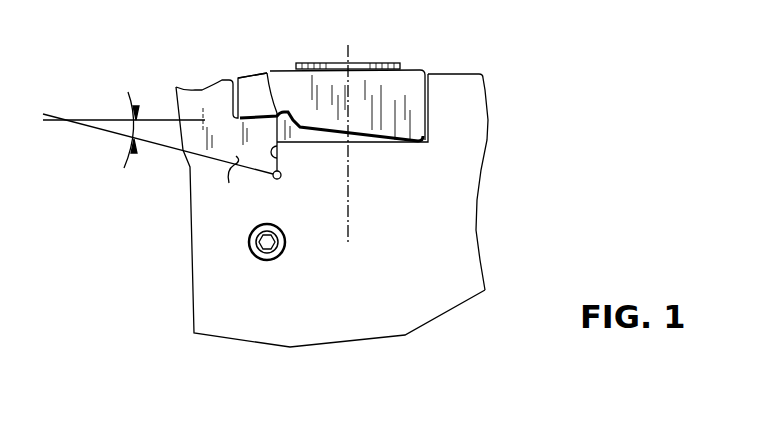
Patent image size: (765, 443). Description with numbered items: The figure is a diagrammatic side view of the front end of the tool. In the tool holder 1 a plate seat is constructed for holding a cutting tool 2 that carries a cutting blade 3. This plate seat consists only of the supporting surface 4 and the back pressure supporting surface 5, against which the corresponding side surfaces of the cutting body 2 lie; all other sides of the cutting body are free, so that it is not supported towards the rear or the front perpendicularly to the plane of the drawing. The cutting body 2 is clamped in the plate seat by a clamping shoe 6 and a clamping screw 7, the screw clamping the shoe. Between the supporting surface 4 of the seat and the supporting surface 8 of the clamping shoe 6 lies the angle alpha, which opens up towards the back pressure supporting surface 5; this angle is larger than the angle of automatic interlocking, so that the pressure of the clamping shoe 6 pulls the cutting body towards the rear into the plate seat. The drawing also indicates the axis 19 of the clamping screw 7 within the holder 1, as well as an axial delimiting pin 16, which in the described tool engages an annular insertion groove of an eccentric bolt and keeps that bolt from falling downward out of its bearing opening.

The tool holder 1 is at (475, 116).
The cutting tool 2 is at (216, 157).
The cutting blade 3 is at (176, 87).
The supporting surface 4 is at (231, 184).
The back pressure supporting surface 5 is at (277, 157).
The clamping shoe 6 is at (408, 82).
The clamping screw 7 is at (358, 66).
The supporting surface of the clamping shoe 8 is at (267, 73).
The axial delimiting pin 16 is at (272, 258).
The axis of the clamping screw 19 is at (348, 176).